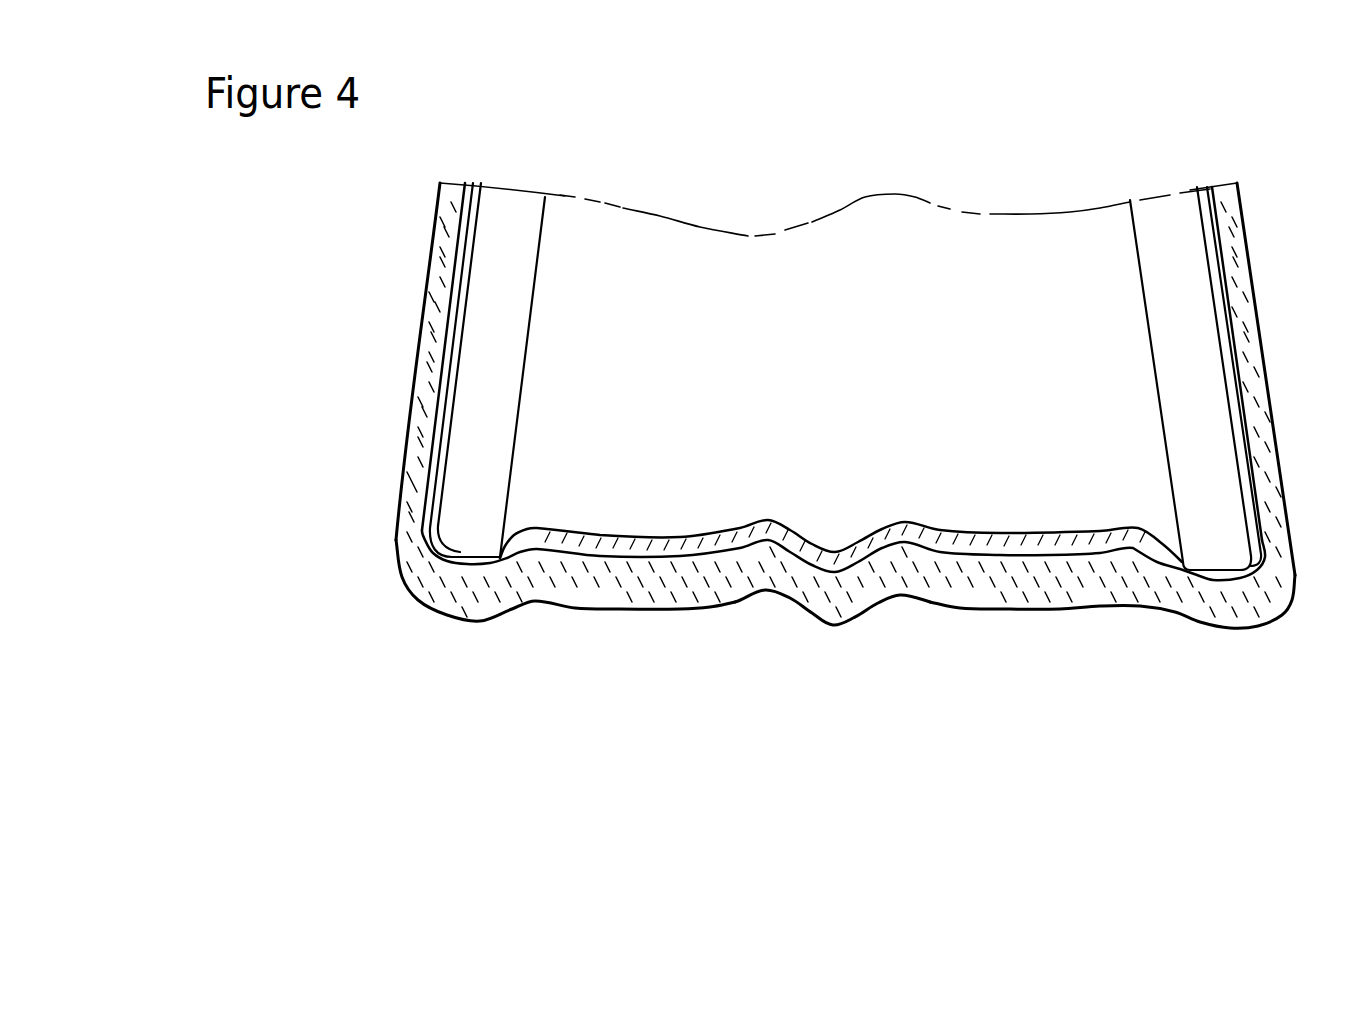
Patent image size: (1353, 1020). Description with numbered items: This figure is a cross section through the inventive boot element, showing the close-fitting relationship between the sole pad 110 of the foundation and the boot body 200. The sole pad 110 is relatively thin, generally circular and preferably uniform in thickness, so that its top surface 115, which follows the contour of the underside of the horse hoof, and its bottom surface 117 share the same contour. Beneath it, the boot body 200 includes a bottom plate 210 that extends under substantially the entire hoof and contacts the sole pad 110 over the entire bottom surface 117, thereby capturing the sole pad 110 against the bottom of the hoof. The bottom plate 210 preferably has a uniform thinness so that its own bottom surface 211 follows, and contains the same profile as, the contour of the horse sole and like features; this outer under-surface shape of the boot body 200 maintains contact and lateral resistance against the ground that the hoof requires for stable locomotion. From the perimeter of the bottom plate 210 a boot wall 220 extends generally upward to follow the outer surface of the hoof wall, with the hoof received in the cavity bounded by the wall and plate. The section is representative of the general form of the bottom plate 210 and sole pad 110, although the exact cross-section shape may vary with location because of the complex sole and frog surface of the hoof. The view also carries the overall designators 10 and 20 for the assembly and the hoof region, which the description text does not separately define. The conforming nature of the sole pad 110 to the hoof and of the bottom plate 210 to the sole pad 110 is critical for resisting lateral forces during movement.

The pouch assembly 10 is at (1165, 156).
The pouch body 20 is at (1131, 203).
The sole pad 110 is at (1050, 556).
The top surface 115 is at (676, 520).
The bottom surface 117 is at (676, 574).
The boot body 200 is at (296, 548).
The bottom plate 210 is at (837, 627).
The bottom surface 211 is at (896, 615).
The boot wall 220 is at (420, 343).